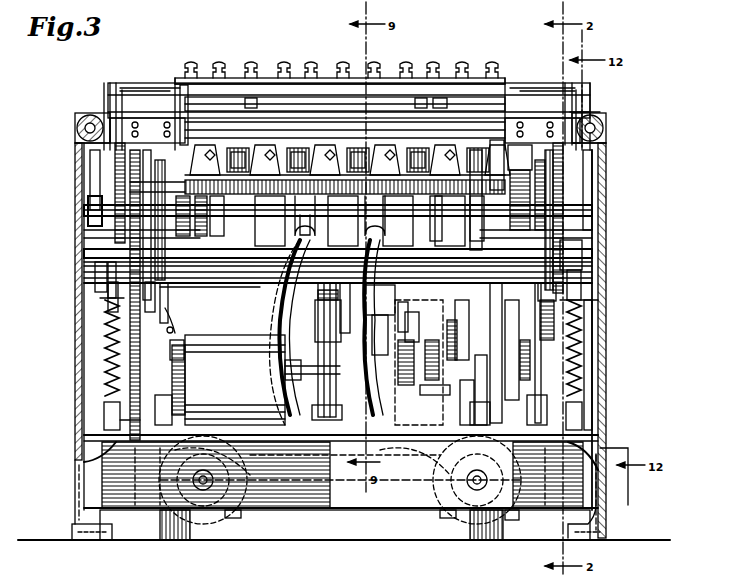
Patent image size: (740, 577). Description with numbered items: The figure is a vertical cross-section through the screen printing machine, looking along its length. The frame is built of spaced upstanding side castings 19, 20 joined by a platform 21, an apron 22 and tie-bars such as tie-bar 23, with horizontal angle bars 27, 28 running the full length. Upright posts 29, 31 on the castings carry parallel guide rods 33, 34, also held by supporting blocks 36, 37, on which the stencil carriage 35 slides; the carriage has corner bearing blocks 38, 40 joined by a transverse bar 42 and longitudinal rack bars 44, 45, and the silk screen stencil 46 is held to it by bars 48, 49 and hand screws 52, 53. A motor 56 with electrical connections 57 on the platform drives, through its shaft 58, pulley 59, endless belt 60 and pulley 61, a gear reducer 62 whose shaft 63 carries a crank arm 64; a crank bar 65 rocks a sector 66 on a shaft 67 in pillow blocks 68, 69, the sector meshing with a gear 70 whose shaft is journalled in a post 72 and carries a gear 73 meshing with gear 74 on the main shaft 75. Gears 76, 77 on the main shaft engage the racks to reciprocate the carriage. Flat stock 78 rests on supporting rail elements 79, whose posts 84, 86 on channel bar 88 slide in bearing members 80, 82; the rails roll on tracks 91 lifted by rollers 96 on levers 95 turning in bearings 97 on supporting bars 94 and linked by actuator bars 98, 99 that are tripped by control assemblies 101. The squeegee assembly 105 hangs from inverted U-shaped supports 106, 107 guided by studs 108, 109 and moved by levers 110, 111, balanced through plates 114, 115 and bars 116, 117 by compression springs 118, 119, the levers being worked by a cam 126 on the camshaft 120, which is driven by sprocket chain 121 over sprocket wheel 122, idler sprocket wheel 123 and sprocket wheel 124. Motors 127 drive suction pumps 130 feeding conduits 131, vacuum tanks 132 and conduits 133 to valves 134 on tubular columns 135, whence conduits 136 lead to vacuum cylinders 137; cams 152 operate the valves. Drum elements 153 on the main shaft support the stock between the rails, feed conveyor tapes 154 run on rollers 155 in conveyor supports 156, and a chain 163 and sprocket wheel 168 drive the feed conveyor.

The side casting 19 is at (608, 317).
The side casting 20 is at (75, 322).
The platform 21 is at (84, 424).
The apron 22 is at (338, 506).
The tie-bar 23 is at (294, 308).
The angle bar 27 is at (598, 231).
The angle bar 28 is at (90, 185).
The upright post 29 is at (603, 130).
The upright post 31 is at (78, 131).
The guide rod 33 is at (604, 143).
The guide rod 34 is at (78, 140).
The stencil carriage 35 is at (358, 110).
The supporting block 36 is at (606, 118).
The supporting block 37 is at (75, 116).
The bearing block 38 is at (526, 125).
The bearing block 40 is at (148, 118).
The transverse bar 42 is at (395, 128).
The rack bar 44 is at (560, 120).
The rack bar 45 is at (122, 95).
The silk screen stencil 46 is at (248, 146).
The bar 48 is at (462, 107).
The bar 49 is at (262, 104).
The hand screw 52 is at (415, 104).
The hand screw 53 is at (250, 108).
The motor 56 is at (220, 380).
The electrical connections 57 is at (178, 345).
The motor shaft 58 is at (305, 368).
The pulley 59 is at (419, 362).
The endless belt 60 is at (406, 352).
The pulley 61 is at (409, 322).
The gear reducer 62 is at (431, 360).
The gear reducer shaft 63 is at (470, 324).
The crank arm 64 is at (460, 378).
The crank bar 65 is at (502, 364).
The sector 66 is at (598, 367).
The shaft 67 is at (553, 400).
The pillow block 68 is at (508, 406).
The pillow block 69 is at (340, 473).
The gear 70 is at (505, 348).
The post 72 is at (470, 308).
The gear 73 is at (555, 328).
The gear 74 is at (520, 187).
The main shaft 75 is at (84, 212).
The gear 76 is at (563, 178).
The gear 77 is at (115, 168).
The flat stock 78 is at (276, 148).
The supporting rail element 79 is at (228, 155).
The vertical slide bearing member 80 is at (490, 128).
The vertical slide bearing member 82 is at (188, 129).
The post 84 is at (505, 111).
The post 86 is at (180, 98).
The channel bar 88 is at (183, 90).
The tracks 91 is at (170, 186).
The supporting bar 94 is at (206, 218).
The lever 95 is at (337, 218).
The roller 96 is at (215, 216).
The bearing 97 is at (220, 286).
The actuator bar 98 is at (511, 220).
The actuator bar 99 is at (147, 295).
The control assembly 101 is at (500, 221).
The squeegee assembly 105 is at (322, 80).
The inverted U-shaped support 106 is at (575, 112).
The inverted U-shaped support 107 is at (105, 85).
The stud 108 is at (576, 116).
The stud 109 is at (108, 113).
The lever 110 is at (598, 283).
The lever 111 is at (95, 275).
The plate 114 is at (582, 256).
The plate 115 is at (92, 258).
The bar 116 is at (598, 297).
The bar 117 is at (108, 296).
The counterbalancing compression spring 118 is at (583, 347).
The counterbalancing compression spring 119 is at (104, 372).
The camshaft 120 is at (210, 299).
The endless sprocket chain 121 is at (460, 395).
The sprocket wheel 122 is at (480, 258).
The idler sprocket wheel 123 is at (475, 409).
The sprocket wheel 124 is at (460, 333).
The cam 126 is at (118, 304).
The motor 127 is at (245, 497).
The suction pump 130 is at (339, 525).
The conduit 131 is at (340, 493).
The vacuum tank 132 is at (336, 497).
The conduit 133 is at (312, 467).
The valve 134 is at (326, 317).
The tubular column 135 is at (322, 396).
The conduit 136 is at (318, 322).
The vacuum cylinder 137 is at (318, 228).
The cam 152 is at (305, 298).
The drum element 153 is at (360, 223).
The feed conveyor tape 154 is at (290, 150).
The roller 155 is at (302, 152).
The conveyor support 156 is at (306, 153).
The chain 163 is at (165, 328).
The sprocket wheel 168 is at (156, 322).